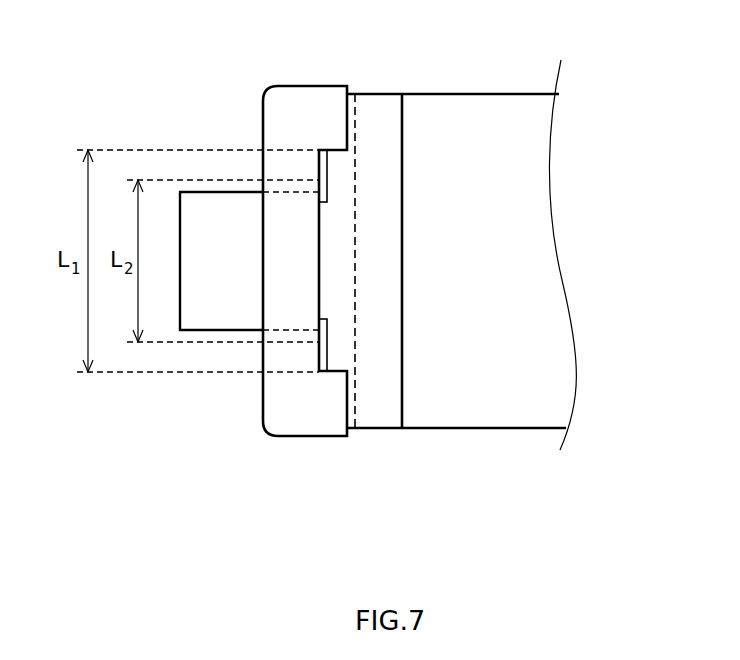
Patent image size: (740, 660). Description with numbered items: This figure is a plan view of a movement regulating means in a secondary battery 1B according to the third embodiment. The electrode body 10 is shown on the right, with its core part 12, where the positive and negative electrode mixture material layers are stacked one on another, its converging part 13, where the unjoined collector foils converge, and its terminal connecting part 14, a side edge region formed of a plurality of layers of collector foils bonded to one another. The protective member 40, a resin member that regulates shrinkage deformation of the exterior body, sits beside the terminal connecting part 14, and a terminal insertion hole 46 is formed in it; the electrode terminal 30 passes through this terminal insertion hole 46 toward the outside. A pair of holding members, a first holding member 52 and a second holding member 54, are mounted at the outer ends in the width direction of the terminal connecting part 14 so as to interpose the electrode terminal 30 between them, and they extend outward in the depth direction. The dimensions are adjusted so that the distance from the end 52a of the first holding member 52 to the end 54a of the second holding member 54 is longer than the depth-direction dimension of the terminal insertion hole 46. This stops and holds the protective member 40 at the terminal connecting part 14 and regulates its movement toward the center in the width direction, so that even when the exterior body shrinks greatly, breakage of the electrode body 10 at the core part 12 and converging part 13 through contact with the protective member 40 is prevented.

The secondary battery 1B is at (53, 35).
The electrode body 10 is at (647, 165).
The core part 12 is at (508, 190).
The converging part 13 is at (397, 215).
The terminal connecting part 14 is at (343, 272).
The electrode terminal 30 is at (213, 212).
The protective member 40 is at (295, 95).
The terminal insertion hole 46 is at (290, 337).
The first holding member 52 is at (328, 185).
The end of the first holding member 52a is at (322, 140).
The second holding member 54 is at (327, 337).
The end of the second holding member 54a is at (322, 372).